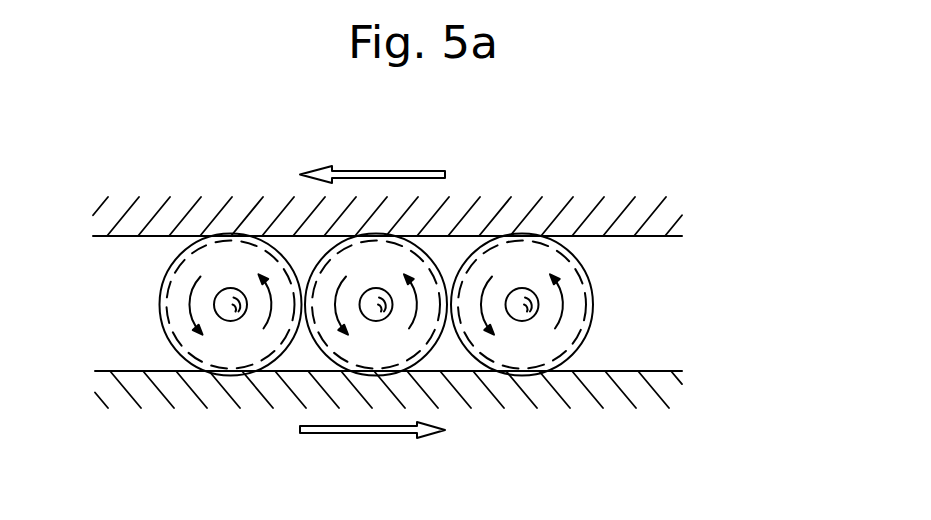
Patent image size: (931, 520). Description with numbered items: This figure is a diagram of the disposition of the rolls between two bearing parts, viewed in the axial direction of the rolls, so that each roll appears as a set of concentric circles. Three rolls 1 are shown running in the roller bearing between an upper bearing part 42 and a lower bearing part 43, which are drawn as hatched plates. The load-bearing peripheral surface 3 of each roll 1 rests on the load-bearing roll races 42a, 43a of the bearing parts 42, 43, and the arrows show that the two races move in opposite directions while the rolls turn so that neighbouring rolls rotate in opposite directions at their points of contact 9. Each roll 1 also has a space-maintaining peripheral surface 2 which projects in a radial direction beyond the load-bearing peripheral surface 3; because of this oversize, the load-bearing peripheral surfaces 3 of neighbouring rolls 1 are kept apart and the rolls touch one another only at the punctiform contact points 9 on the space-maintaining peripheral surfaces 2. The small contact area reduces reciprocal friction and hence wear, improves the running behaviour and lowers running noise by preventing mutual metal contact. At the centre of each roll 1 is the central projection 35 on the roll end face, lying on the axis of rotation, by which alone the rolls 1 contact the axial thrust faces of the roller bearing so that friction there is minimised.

The roll 1 is at (163, 345).
The space-maintaining peripheral surface 2 is at (163, 283).
The load-bearing peripheral surface 3 is at (166, 311).
The point of contact 9 is at (301, 303).
The central projection 35 is at (222, 297).
The bearing part 42 is at (622, 218).
The load-bearing roll race 42a is at (676, 246).
The bearing part 43 is at (543, 392).
The load-bearing roll race 43a is at (677, 374).